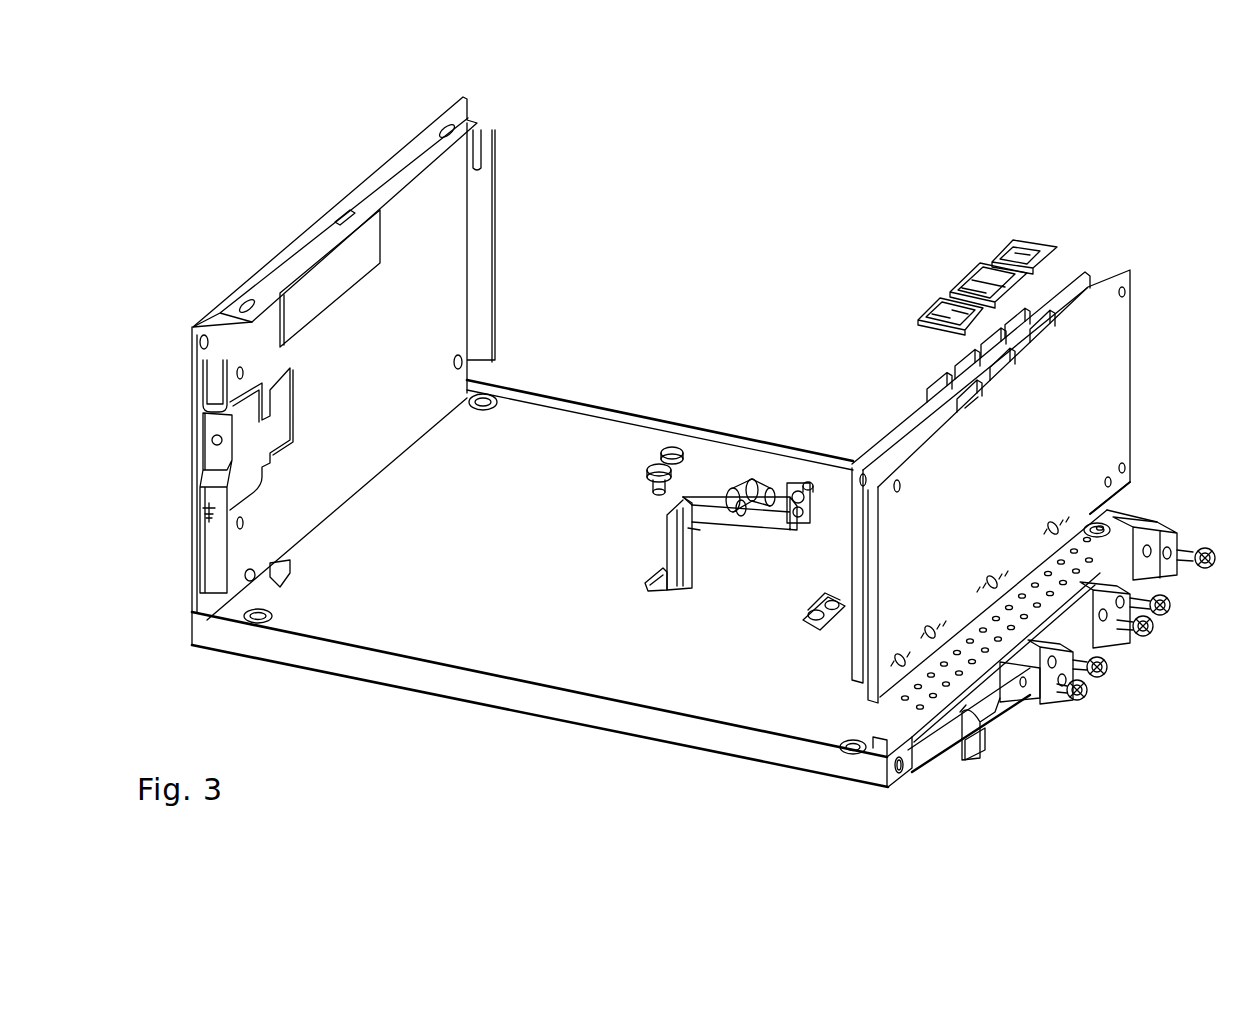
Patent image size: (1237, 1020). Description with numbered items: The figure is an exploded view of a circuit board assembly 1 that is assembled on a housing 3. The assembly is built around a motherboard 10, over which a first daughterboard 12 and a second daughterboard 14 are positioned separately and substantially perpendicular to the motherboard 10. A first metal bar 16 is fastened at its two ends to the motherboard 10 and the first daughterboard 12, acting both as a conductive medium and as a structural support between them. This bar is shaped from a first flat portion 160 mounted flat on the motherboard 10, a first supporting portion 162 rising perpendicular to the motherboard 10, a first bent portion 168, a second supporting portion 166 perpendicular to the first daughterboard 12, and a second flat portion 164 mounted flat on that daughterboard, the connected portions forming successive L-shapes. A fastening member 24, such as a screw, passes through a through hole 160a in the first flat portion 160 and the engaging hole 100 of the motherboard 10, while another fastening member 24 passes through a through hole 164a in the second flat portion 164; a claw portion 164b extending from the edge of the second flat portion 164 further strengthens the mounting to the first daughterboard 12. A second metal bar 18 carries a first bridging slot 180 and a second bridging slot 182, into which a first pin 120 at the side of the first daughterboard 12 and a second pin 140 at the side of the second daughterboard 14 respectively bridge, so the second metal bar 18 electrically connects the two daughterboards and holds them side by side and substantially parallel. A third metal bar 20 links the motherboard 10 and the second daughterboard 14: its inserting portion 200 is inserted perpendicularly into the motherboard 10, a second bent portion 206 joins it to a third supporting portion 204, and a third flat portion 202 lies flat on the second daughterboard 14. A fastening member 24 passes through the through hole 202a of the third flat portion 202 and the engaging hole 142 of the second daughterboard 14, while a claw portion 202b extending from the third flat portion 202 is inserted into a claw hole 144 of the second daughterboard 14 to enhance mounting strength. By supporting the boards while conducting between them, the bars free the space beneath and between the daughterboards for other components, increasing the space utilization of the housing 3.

The circuit board assembly 1 is at (714, 155).
The housing 3 is at (304, 253).
The motherboard 10 is at (508, 437).
The first daughterboard 12 is at (1078, 293).
The second daughterboard 14 is at (1118, 357).
The first metal bar 16 is at (598, 599).
The second metal bar 18 is at (953, 287).
The third metal bar 20 is at (1047, 658).
The fastening member 24 is at (662, 447).
The engaging hole 100 is at (820, 628).
The first pin 120 is at (937, 393).
The second pin 140 is at (972, 401).
The engaging hole 142 is at (913, 744).
The claw hole 144 is at (880, 740).
The first flat portion 160 is at (667, 590).
The through hole 160a is at (647, 580).
The first supporting portion 162 is at (668, 603).
The second flat portion 164 is at (740, 530).
The through hole 164a is at (810, 497).
The claw portion 164b is at (812, 483).
The second supporting portion 166 is at (688, 530).
The first bent portion 168 is at (682, 530).
The first bridging slot 180 is at (933, 300).
The second bridging slot 182 is at (955, 300).
The inserting portion 200 is at (962, 715).
The third flat portion 202 is at (1018, 702).
The through hole 202a is at (1047, 680).
The claw portion 202b is at (966, 713).
The third supporting portion 204 is at (1013, 728).
The second bent portion 206 is at (978, 747).